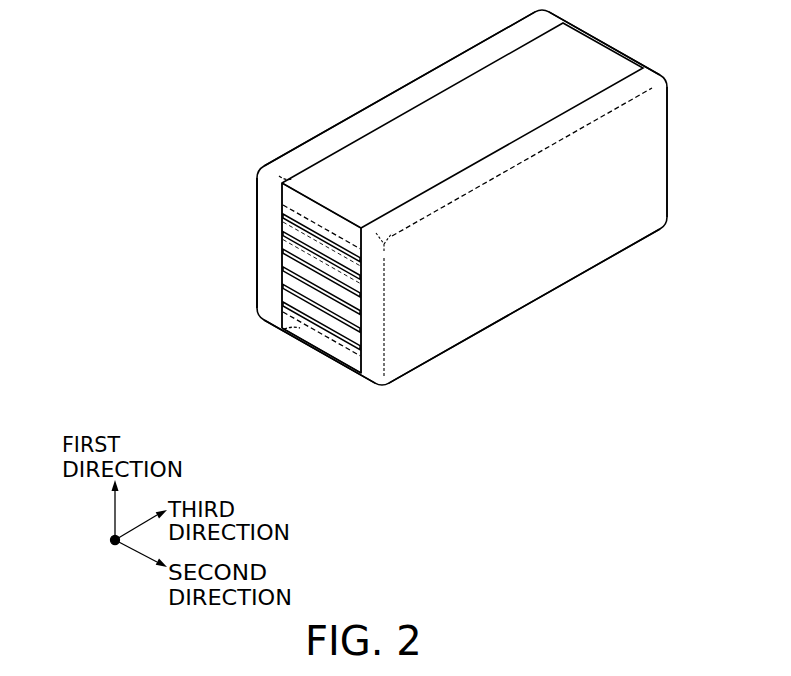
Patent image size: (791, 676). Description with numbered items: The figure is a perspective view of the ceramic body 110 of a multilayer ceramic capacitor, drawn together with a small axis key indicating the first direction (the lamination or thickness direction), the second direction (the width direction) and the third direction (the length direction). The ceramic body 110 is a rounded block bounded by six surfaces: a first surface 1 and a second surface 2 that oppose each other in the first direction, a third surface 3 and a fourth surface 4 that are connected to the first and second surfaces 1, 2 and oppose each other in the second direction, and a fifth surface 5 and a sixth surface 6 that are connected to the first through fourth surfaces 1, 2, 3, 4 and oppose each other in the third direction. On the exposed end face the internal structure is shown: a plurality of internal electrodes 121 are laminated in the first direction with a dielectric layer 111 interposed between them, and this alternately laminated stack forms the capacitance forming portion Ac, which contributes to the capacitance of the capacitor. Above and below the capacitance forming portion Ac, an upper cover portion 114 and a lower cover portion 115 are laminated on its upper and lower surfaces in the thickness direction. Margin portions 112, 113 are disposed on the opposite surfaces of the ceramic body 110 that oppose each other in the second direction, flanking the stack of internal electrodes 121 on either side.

The ceramic body 110 is at (215, 46).
The first surface 1 is at (453, 85).
The second surface 2 is at (487, 347).
The third surface 3 is at (302, 128).
The fourth surface 4 is at (553, 263).
The fifth surface 5 is at (295, 351).
The sixth surface 6 is at (636, 45).
The dielectric layer 111 is at (281, 268).
The margin portion 112 is at (263, 303).
The margin portion 113 is at (373, 363).
The upper cover portion 114 is at (287, 203).
The lower cover portion 115 is at (291, 327).
The internal electrode 121 is at (289, 226).
The capacitance forming portion Ac is at (376, 316).